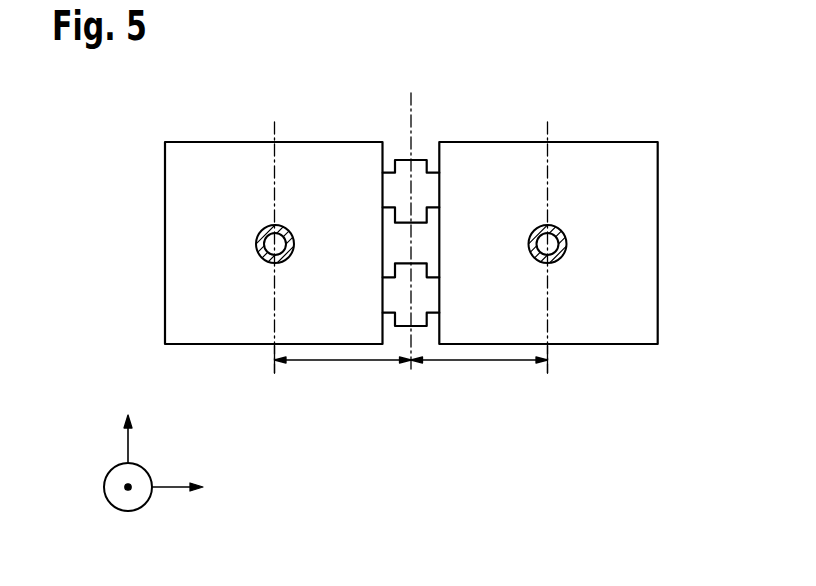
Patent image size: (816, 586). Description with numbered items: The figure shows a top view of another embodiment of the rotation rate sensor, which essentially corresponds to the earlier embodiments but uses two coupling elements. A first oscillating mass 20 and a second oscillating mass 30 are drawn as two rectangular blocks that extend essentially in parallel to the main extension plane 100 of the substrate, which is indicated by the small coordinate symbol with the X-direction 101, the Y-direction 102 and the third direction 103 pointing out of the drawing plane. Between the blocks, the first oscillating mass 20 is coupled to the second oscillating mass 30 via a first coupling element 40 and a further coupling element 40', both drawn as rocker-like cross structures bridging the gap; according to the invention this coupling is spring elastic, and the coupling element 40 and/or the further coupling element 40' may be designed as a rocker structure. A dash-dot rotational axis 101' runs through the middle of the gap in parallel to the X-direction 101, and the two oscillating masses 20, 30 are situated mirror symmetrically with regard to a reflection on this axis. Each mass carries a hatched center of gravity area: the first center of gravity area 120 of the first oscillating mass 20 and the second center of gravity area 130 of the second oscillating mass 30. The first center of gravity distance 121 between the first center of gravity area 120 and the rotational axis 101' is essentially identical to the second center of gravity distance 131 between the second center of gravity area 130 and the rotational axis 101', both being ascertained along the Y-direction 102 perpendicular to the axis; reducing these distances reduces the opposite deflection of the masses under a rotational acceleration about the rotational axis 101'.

The first oscillating mass 20 is at (218, 163).
The second oscillating mass 30 is at (593, 163).
The first coupling element 40 is at (432, 145).
The further coupling element 40' is at (372, 196).
The rotational axis 101' is at (384, 195).
The first center of gravity area 120 is at (256, 245).
The second center of gravity area 130 is at (566, 244).
The first center of gravity distance 121 is at (343, 362).
The second center of gravity distance 131 is at (478, 362).
The main extension plane 100 is at (210, 461).
The X-direction 101 is at (102, 430).
The Y-direction 102 is at (193, 507).
The third axis direction 103 is at (127, 488).